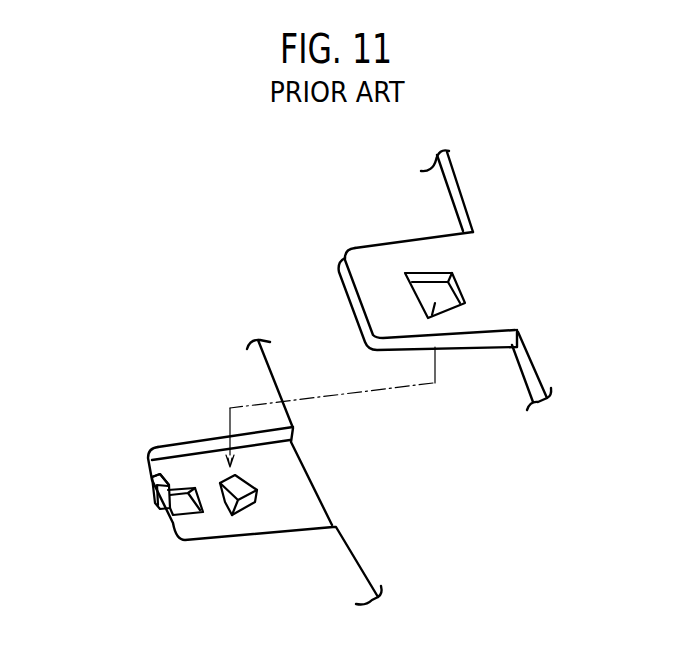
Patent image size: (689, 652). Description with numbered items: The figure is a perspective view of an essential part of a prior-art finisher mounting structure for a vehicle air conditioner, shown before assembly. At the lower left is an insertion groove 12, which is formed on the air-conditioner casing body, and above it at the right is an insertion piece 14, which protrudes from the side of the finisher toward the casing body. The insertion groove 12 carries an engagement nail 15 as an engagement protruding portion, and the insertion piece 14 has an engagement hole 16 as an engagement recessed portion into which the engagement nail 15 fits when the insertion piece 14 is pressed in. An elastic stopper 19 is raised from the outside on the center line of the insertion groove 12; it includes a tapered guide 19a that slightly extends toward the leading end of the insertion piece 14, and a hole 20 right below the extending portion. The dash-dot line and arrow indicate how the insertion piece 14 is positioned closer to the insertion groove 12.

The insertion groove 12 is at (303, 505).
The insertion piece 14 is at (389, 242).
The engagement nail 15 is at (260, 490).
The engagement hole 16 is at (460, 290).
The elastic stopper 19 is at (158, 504).
The guide 19a is at (178, 480).
The hole 20 is at (184, 513).